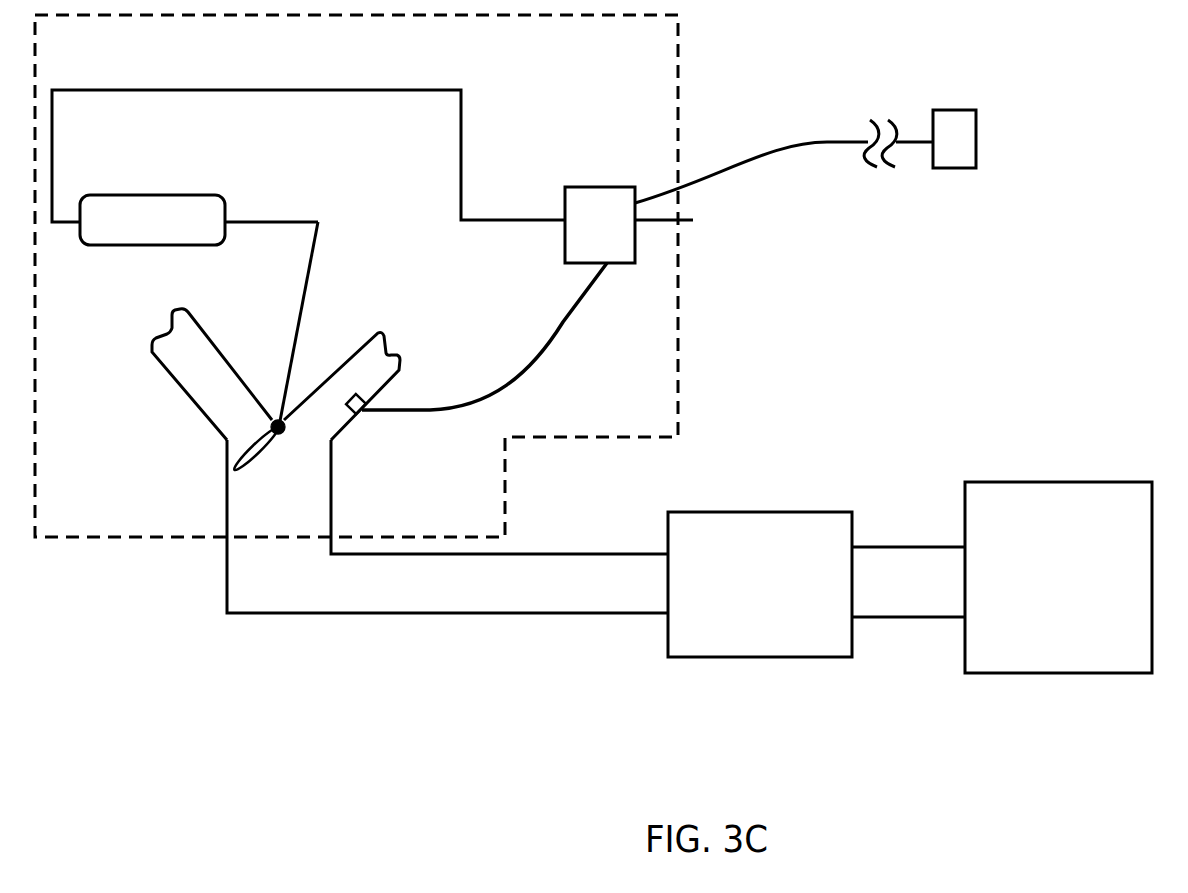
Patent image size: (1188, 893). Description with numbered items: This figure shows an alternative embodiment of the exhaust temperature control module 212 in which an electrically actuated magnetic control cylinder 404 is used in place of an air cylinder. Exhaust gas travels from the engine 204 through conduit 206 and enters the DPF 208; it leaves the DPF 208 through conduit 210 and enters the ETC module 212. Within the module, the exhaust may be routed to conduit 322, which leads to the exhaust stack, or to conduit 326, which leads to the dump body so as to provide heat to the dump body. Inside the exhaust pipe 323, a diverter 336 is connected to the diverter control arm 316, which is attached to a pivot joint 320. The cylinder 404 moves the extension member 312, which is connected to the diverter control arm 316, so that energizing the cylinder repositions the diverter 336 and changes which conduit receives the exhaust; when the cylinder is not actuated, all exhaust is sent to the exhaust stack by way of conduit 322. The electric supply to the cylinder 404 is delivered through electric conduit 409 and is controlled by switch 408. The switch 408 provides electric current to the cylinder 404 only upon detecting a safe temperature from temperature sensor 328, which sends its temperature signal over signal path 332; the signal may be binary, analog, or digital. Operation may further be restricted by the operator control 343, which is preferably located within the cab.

The exhaust temperature control module 212 is at (680, 118).
The electric conduit 409 is at (422, 90).
The electrically actuated magnetic control cylinder 404 is at (158, 195).
The extension member 312 is at (248, 222).
The diverter control arm 316 is at (296, 322).
The pivot joint 320 is at (282, 420).
The diverter 336 is at (242, 468).
The conduit 322 is at (180, 365).
The conduit 326 is at (388, 369).
The temperature sensor 328 is at (359, 412).
The signal path 332 is at (563, 322).
The switch 408 is at (620, 192).
The operator control 343 is at (953, 110).
The exhaust pipe 323 is at (227, 503).
The conduit 210 is at (641, 553).
The conduit 206 is at (900, 547).
The DPF 208 is at (760, 584).
The engine 204 is at (1058, 577).